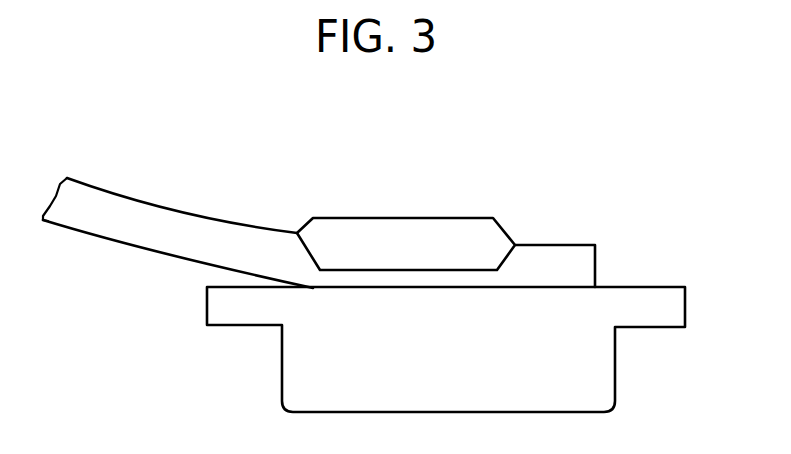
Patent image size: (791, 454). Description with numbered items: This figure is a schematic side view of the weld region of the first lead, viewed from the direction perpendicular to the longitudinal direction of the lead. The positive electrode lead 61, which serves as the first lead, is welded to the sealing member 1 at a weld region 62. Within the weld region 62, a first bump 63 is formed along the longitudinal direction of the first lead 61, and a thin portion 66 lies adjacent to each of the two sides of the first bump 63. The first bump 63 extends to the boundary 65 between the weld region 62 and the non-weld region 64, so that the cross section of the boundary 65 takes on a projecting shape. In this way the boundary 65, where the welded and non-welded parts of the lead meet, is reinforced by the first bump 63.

The sealing member 1 is at (577, 377).
The positive electrode lead 61 is at (597, 264).
The weld region 62 is at (503, 315).
The first bump 63 is at (427, 235).
The non-weld region 64 is at (182, 232).
The boundary 65 is at (311, 287).
The thin portion 66 is at (355, 268).